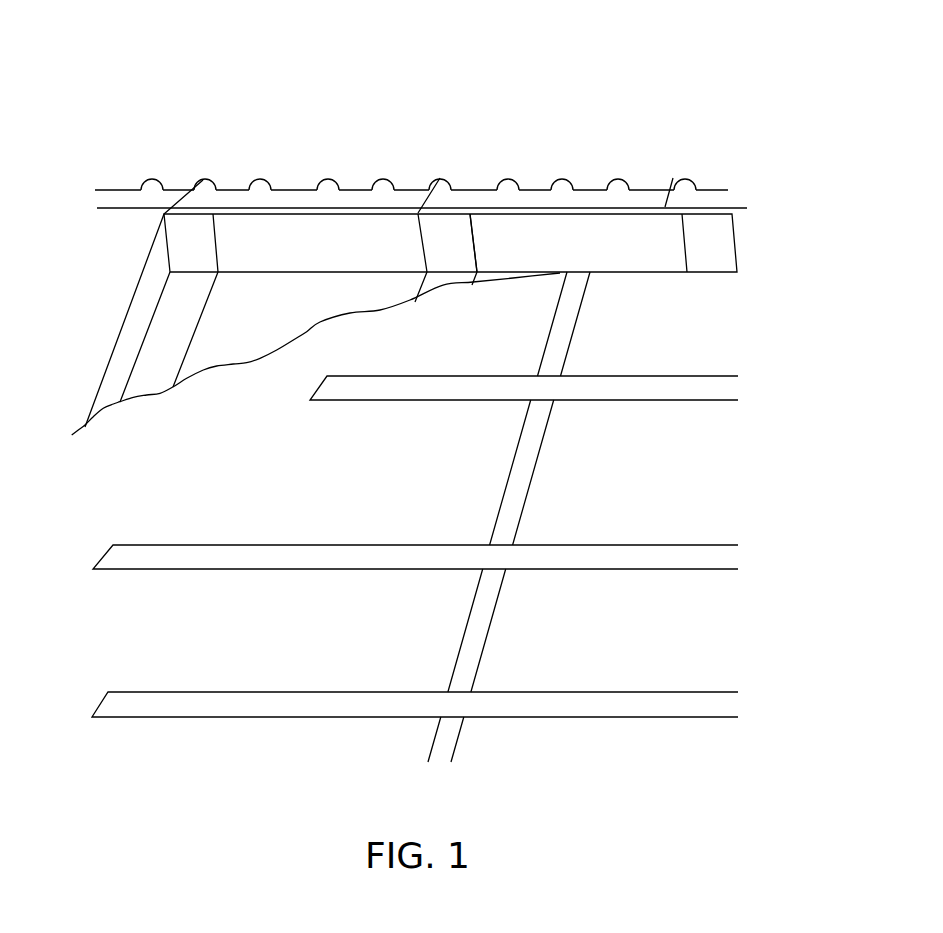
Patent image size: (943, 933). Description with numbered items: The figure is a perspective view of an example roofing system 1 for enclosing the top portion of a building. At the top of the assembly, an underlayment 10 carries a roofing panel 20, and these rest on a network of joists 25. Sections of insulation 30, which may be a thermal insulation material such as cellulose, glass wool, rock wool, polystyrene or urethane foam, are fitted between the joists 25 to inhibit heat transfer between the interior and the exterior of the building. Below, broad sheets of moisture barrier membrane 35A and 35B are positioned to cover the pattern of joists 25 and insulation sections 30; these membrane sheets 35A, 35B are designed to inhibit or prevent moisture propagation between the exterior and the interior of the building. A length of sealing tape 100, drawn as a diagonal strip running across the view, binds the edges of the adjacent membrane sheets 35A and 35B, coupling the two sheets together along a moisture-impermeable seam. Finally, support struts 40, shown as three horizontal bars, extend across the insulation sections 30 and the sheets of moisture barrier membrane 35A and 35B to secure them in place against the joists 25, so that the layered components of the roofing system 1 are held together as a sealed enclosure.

The roofing system 1 is at (767, 140).
The underlayment 10 is at (115, 208).
The roofing panel 20 is at (259, 177).
The joists 25 is at (458, 233).
The insulation 30 is at (328, 230).
The moisture barrier membrane 35A is at (387, 492).
The moisture barrier membrane 35B is at (665, 487).
The support struts 40 is at (292, 568).
The sealing tape 100 is at (563, 323).